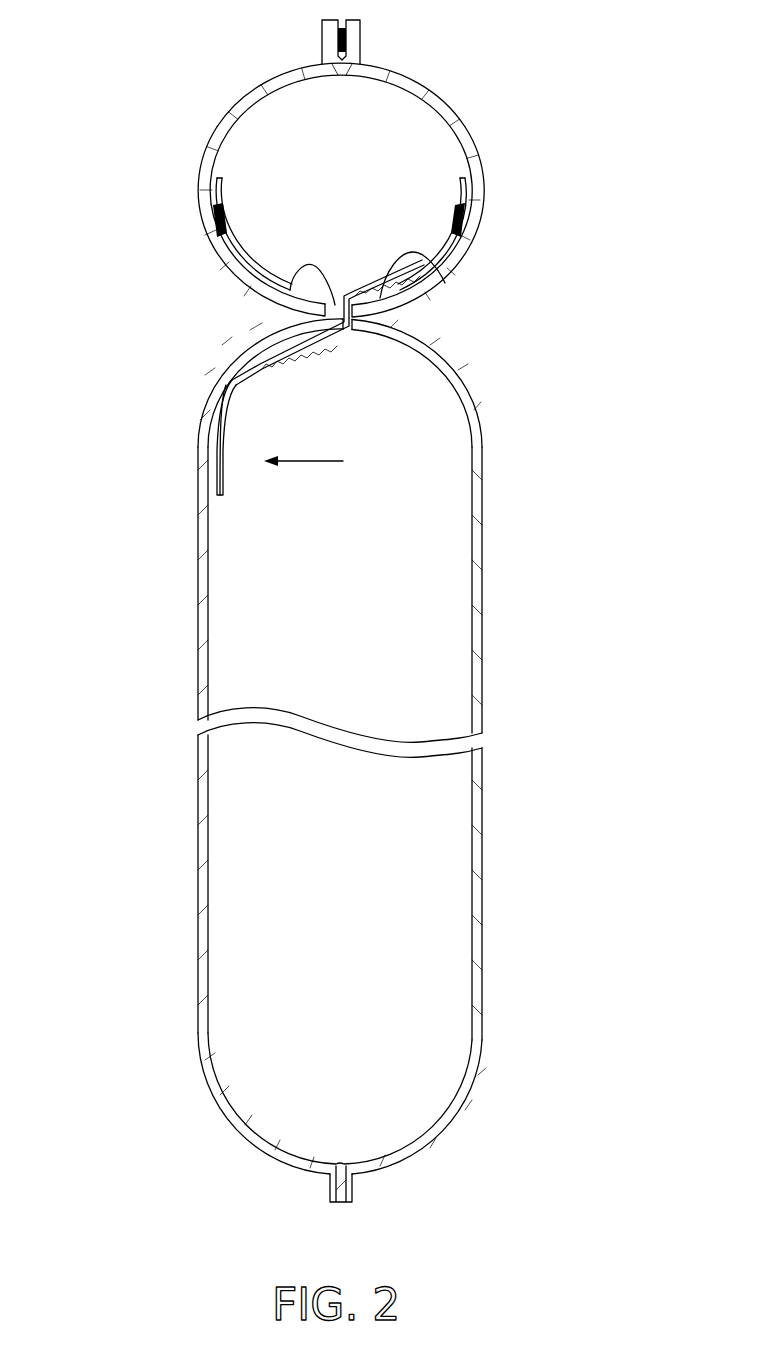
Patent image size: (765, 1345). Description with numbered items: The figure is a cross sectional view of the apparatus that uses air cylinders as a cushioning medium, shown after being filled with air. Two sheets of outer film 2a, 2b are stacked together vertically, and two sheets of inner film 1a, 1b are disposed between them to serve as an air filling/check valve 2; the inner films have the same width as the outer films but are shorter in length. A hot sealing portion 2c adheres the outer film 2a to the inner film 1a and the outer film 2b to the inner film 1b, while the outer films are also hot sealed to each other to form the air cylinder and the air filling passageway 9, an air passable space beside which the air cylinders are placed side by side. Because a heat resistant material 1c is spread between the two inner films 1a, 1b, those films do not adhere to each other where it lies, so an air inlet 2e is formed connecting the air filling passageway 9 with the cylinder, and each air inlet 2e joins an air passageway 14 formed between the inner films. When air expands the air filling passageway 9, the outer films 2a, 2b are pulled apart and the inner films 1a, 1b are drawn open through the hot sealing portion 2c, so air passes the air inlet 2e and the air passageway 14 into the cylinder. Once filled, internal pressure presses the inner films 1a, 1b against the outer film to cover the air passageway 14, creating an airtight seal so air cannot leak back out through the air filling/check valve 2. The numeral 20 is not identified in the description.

The air filling/check valve 2 is at (334, 611).
The outer film 2a is at (208, 177).
The outer film 2b is at (470, 132).
The hot sealing portion 2c is at (464, 220).
The air inlet 2e is at (268, 290).
The air filling passageway 9 is at (248, 158).
The inner film 1a is at (240, 250).
The inner film 1b is at (458, 200).
The heat resistant material 1c is at (445, 250).
The air passageway 14 is at (248, 370).
The main chamber 20 is at (445, 500).